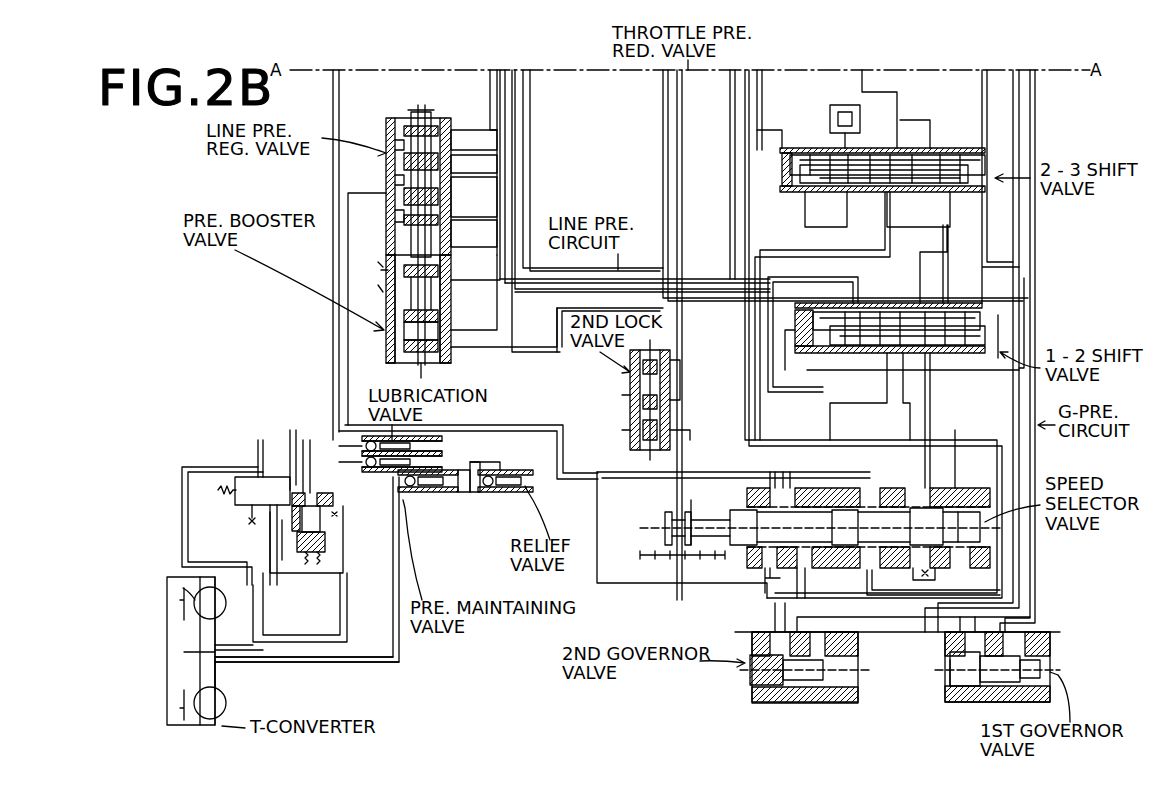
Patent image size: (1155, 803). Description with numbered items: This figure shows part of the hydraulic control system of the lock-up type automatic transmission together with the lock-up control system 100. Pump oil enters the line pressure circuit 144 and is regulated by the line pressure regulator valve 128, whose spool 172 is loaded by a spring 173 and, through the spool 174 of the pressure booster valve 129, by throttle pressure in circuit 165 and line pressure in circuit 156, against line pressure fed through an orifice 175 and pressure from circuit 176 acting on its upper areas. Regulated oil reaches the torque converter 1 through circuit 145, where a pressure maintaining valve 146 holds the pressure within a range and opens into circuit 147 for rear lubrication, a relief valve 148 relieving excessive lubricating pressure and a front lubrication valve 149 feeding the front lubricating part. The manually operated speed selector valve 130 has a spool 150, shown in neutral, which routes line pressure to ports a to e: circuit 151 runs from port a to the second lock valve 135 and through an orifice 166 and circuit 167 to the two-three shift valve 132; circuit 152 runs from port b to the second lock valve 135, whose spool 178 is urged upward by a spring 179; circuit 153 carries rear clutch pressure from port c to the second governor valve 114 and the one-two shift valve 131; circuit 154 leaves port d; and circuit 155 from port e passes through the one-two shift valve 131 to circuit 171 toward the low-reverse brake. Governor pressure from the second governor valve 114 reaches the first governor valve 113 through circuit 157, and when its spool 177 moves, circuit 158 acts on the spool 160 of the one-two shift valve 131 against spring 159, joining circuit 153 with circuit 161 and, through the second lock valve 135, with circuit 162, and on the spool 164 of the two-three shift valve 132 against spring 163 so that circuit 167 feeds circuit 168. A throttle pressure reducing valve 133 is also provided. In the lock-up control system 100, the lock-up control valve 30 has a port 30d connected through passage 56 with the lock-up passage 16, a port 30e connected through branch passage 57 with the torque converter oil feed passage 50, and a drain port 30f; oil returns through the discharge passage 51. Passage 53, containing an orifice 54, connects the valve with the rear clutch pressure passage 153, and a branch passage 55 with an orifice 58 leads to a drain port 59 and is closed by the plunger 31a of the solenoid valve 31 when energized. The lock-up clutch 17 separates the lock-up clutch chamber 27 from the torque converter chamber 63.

The torque converter 1 is at (225, 686).
The lock-up passage 16 is at (240, 650).
The lock-up clutch 17 is at (161, 706).
The lock-up clutch chamber 27 is at (175, 638).
The lock-up control valve 30 is at (276, 500).
The port 30d is at (265, 470).
The port 30e is at (268, 520).
The drain port 30f is at (248, 512).
The solenoid valve 31 is at (305, 575).
The plunger 31a is at (335, 512).
The oil feed passage 50 is at (325, 640).
The oil discharge passage 51 is at (325, 660).
The passage 53 is at (330, 470).
The orifice 54 is at (333, 487).
The branch passage 55 is at (290, 540).
The passage 56 is at (182, 512).
The branch passage 57 is at (325, 600).
The orifice 58 is at (310, 490).
The drain port 59 is at (335, 524).
The torque converter chamber 63 is at (183, 590).
The lock-up control system 100 is at (225, 460).
The first governor valve 113 is at (942, 673).
The second governor valve 114 is at (862, 680).
The line pressure regulator valve 128 is at (416, 112).
The pressure booster valve 129 is at (400, 366).
The speed selector valve 130 is at (653, 534).
The 1-2 shift valve 131 is at (1009, 311).
The 2-3 shift valve 132 is at (1001, 152).
The throttle pressure reducing valve 133 is at (805, 190).
The second lock valve 135 is at (660, 348).
The line pressure circuit 144 is at (505, 78).
The circuit 145 is at (358, 193).
The pressure maintaining valve 146 is at (412, 492).
The circuit 147 is at (462, 490).
The relief valve 148 is at (510, 492).
The front lubrication valve 149 is at (442, 442).
The spool 150 is at (732, 516).
The circuit 151 is at (757, 130).
The circuit 152 is at (680, 386).
The circuit 153 is at (333, 88).
The circuit 154 is at (1038, 78).
The circuit 155 is at (900, 384).
The circuit 156 is at (497, 330).
The circuit 157 is at (900, 632).
The circuit 158 is at (982, 82).
The spring 159 is at (792, 372).
The spool 160 is at (1005, 338).
The circuit 161 is at (855, 300).
The circuit 162 is at (512, 100).
The spring 163 is at (852, 192).
The spool 164 is at (958, 192).
The circuit 165 is at (663, 78).
The orifice 166 is at (858, 112).
The circuit 167 is at (910, 140).
The circuit 168 is at (528, 122).
The circuit 171 is at (1030, 100).
The spool 172 is at (412, 112).
The spring 173 is at (368, 273).
The spool 174 is at (426, 362).
The orifice 175 is at (490, 150).
The circuit 176 is at (490, 80).
The spool 177 is at (948, 672).
The spool 178 is at (630, 413).
The spring 179 is at (630, 437).